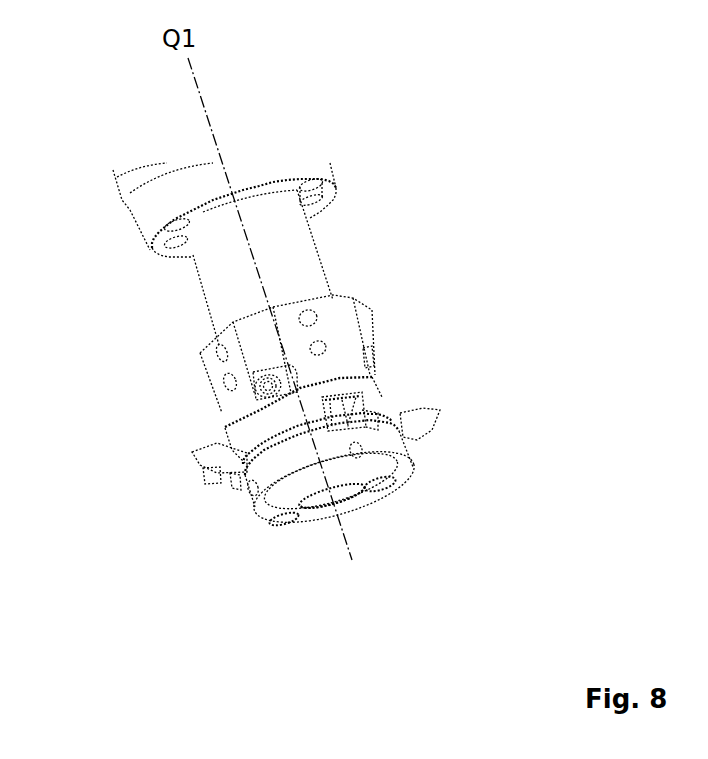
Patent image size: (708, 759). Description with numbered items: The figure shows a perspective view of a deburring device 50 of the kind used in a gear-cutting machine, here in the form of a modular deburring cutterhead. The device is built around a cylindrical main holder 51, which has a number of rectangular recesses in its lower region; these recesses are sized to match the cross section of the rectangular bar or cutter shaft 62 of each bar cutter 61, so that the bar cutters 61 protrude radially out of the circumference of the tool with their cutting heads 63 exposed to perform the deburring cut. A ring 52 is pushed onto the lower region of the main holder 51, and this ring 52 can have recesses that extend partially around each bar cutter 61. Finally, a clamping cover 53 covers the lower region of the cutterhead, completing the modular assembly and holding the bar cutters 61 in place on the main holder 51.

The deburring device 50 is at (43, 130).
The main holder 51 is at (300, 243).
The ring 52 is at (363, 388).
The clamping cover 53 is at (257, 513).
The bar cutter 61 is at (440, 407).
The cutter shaft 62 is at (237, 478).
The cutting head 63 is at (213, 478).